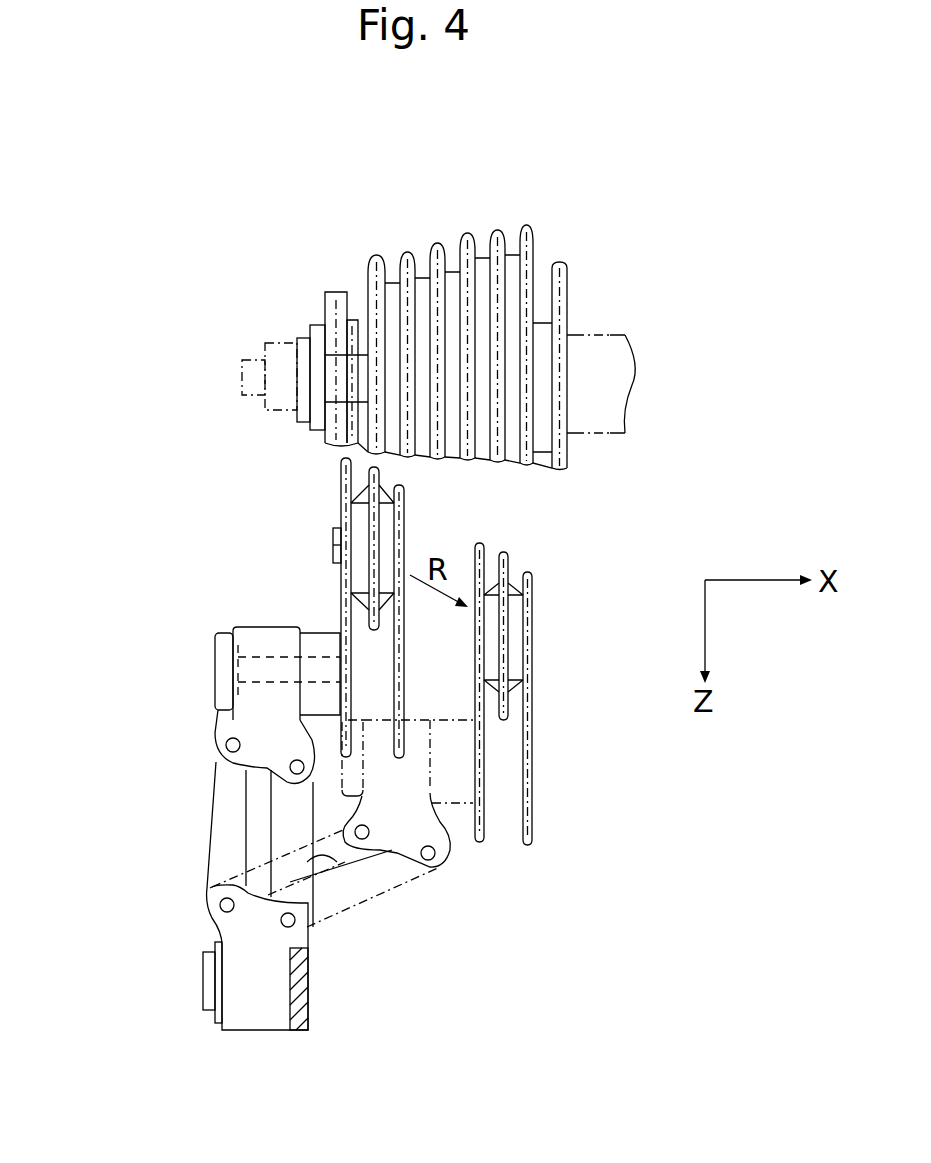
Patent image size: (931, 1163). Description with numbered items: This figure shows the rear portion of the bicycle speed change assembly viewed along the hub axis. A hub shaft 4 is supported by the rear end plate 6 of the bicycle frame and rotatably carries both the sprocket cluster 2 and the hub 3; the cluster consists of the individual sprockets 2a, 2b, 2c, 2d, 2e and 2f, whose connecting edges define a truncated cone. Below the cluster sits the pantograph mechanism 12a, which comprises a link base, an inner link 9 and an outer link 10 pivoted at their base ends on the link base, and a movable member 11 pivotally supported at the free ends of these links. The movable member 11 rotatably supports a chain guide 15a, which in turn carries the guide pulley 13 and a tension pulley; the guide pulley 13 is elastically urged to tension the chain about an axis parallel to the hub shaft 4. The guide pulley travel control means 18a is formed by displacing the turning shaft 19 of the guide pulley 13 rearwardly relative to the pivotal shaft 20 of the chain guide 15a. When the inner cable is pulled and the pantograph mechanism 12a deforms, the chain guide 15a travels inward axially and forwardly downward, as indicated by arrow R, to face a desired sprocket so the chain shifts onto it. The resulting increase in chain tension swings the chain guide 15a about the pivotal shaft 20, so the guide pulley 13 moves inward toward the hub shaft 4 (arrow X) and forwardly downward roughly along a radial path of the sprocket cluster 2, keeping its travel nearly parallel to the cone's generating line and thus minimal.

The sprocket cluster 2 is at (445, 166).
The cluster sprocket 2a is at (372, 258).
The cluster sprocket 2b is at (412, 267).
The cluster sprocket 2c is at (443, 248).
The cluster sprocket 2d is at (468, 236).
The cluster sprocket 2e is at (498, 233).
The cluster sprocket 2f is at (532, 230).
The hub 3 is at (613, 333).
The hub shaft 4 is at (242, 362).
The rear end plate 6 is at (325, 300).
The inner link 9 is at (337, 860).
The outer link 10 is at (212, 818).
The movable member 11 is at (227, 720).
The pantograph mechanism 12a is at (168, 775).
The guide pulley 13 is at (343, 477).
The chain guide 15a is at (405, 520).
The guide pulley travel control means 18a is at (200, 527).
The turning shaft 19 is at (333, 542).
The pivotal shaft 20 is at (322, 657).